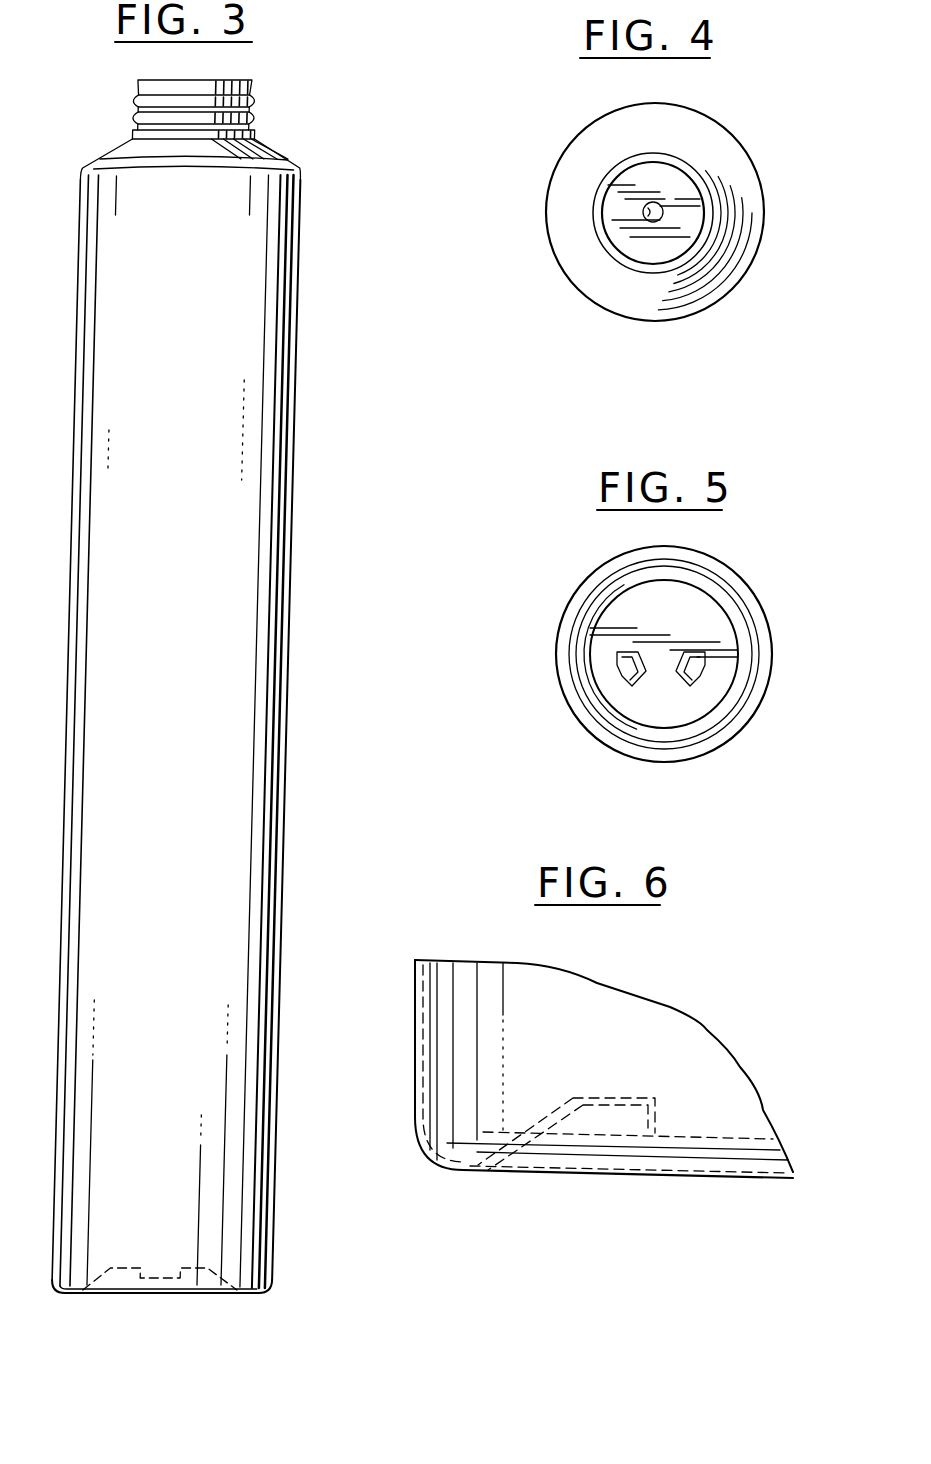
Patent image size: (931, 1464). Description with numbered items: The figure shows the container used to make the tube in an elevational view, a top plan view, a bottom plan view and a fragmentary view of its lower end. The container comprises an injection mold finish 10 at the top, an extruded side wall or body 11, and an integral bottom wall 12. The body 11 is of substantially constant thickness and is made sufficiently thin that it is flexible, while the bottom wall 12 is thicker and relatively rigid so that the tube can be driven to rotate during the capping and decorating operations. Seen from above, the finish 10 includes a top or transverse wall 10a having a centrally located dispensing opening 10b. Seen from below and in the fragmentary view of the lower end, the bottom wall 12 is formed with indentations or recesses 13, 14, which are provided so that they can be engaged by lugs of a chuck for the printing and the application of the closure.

In FIG. 3, the injection mold finish 10 is at (256, 103).
In FIG. 4, the injection mold finish 10 is at (610, 253).
In FIG. 4, the top or transverse wall 10a is at (673, 183).
In FIG. 4, the dispensing opening 10b is at (645, 211).
In FIG. 3, the side wall or body 11 is at (306, 470).
In FIG. 4, the side wall or body 11 is at (762, 197).
In FIG. 5, the side wall or body 11 is at (735, 575).
In FIG. 6, the side wall or body 11 is at (415, 1043).
In FIG. 3, the bottom wall 12 is at (201, 1295).
In FIG. 5, the bottom wall 12 is at (678, 708).
In FIG. 6, the bottom wall 12 is at (597, 1178).
In FIG. 5, the indentation or recess 13 is at (633, 667).
In FIG. 6, the indentation or recess 13 is at (602, 1117).
In FIG. 5, the indentation or recess 14 is at (688, 667).